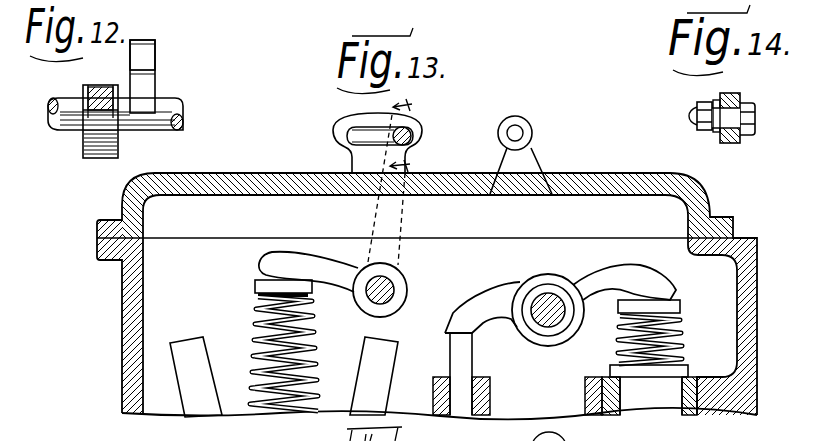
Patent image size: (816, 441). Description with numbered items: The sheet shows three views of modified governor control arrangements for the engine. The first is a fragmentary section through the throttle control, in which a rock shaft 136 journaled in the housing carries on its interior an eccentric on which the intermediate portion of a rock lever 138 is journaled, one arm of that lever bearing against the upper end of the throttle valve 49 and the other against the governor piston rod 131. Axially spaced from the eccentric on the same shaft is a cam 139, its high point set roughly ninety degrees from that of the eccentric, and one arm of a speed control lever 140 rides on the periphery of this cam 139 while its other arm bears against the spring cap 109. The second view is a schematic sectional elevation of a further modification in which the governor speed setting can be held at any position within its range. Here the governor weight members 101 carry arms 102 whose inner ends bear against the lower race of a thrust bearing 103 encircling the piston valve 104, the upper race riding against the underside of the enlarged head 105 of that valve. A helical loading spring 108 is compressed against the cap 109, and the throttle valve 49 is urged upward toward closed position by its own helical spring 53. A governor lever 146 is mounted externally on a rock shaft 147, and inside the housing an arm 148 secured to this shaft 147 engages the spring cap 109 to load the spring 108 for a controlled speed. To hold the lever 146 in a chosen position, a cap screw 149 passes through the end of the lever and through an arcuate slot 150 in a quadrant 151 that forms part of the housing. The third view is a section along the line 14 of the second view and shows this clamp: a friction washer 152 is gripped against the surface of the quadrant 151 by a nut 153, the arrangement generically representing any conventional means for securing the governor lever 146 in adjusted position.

In FIG. 12, the rock shaft 136 is at (158, 127).
In FIG. 12, the rock lever 138 is at (98, 155).
In FIG. 12, the cam 139 is at (148, 86).
In FIG. 12, the speed control lever 140 is at (148, 57).
In FIG. 13, the arcuate slot 150 is at (340, 126).
In FIG. 13, the quadrant 151 is at (352, 158).
In FIG. 13, the cap screw 149 is at (413, 137).
In FIG. 13, the section line 14— 14 is at (418, 133).
In FIG. 13, the governor lever 146 is at (400, 223).
In FIG. 13, the arm 102 is at (533, 155).
In FIG. 13, the arm 148 is at (288, 260).
In FIG. 13, the rock shaft 147 is at (393, 288).
In FIG. 13, the cap 109 is at (255, 287).
In FIG. 13, the helical loading spring 108 is at (312, 336).
In FIG. 13, the weight member 101 is at (383, 342).
In FIG. 13, the thrust bearing 103 is at (547, 288).
In FIG. 13, the enlarged head 105 is at (632, 270).
In FIG. 13, the piston valve 104 is at (548, 330).
In FIG. 13, the piston rod 131 is at (465, 362).
In FIG. 13, the throttle valve 49 is at (672, 306).
In FIG. 13, the helical spring 53 is at (682, 343).
In FIG. 14, the nut 153 is at (703, 101).
In FIG. 14, the friction washer 152 is at (715, 100).